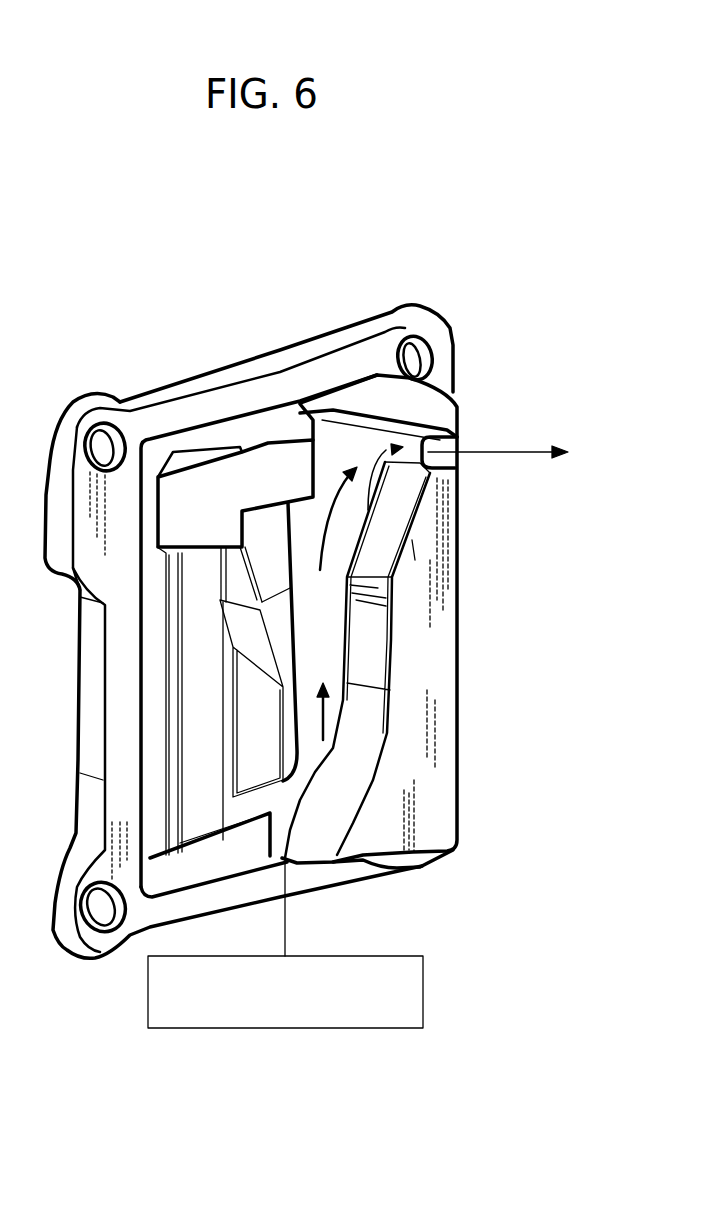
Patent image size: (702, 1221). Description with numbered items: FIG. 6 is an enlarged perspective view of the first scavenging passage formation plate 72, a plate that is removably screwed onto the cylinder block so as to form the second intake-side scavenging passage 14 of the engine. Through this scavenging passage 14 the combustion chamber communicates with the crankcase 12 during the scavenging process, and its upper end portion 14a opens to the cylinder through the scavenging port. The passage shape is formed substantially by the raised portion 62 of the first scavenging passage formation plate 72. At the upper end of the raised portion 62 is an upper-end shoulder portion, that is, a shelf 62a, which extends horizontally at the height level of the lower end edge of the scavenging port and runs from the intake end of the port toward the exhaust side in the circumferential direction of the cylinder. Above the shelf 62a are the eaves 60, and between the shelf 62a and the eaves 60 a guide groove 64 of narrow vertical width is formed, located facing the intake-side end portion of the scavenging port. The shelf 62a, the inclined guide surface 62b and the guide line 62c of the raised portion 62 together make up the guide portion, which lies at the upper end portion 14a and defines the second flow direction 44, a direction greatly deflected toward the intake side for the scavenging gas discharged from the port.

The first scavenging passage formation plate 72 is at (412, 252).
The eaves 60 is at (357, 395).
The raised portion 62 is at (445, 721).
The upper-end shoulder portion (shelf) 62a is at (457, 471).
The inclined guide surface 62b is at (413, 540).
The guide line 62c is at (413, 483).
The guide groove 64 is at (384, 539).
The scavenging passage 14 is at (320, 637).
The upper end portion of the scavenging passage 14a is at (372, 452).
The second flow direction 44 is at (514, 448).
The crankcase 12 is at (425, 983).